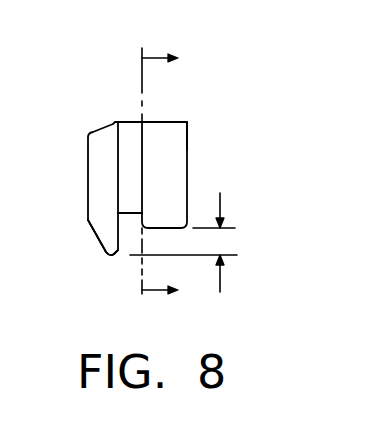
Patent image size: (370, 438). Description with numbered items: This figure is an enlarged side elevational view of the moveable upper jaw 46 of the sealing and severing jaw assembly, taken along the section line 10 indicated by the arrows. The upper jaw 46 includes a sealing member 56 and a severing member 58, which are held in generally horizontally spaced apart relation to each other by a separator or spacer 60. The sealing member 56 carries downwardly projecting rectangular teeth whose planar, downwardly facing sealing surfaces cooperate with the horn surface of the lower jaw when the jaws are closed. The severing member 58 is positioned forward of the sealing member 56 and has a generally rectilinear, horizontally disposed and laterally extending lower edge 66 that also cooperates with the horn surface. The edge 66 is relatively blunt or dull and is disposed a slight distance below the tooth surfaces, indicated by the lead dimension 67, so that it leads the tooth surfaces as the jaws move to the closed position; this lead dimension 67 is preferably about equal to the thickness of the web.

The section line 10- 10 is at (132, 177).
The upper jaw 46 is at (190, 148).
The sealing member 56 is at (172, 173).
The severing member 58 is at (102, 187).
The separator 60 is at (130, 148).
The lower edge 66 is at (112, 255).
The lead dimension 67 is at (220, 243).